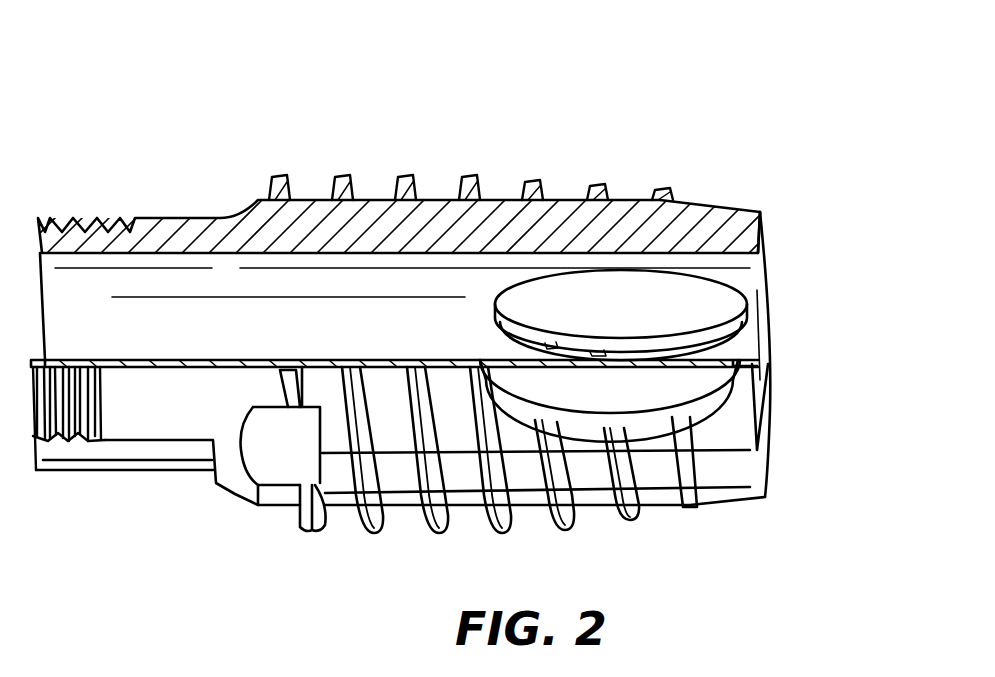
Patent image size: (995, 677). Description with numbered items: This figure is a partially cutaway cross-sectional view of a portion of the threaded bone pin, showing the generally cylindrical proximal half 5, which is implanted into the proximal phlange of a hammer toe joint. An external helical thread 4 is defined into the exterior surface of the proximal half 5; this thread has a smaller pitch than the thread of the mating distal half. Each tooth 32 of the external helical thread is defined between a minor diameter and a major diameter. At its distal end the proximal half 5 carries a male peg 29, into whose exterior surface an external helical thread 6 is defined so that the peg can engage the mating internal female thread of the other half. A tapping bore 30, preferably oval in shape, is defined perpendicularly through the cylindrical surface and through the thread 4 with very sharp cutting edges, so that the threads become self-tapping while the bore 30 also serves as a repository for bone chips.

The proximal half 5 is at (582, 150).
The male peg 29 is at (137, 218).
The external helical thread 4 is at (462, 175).
The tapping bore 30 is at (660, 288).
The tooth 32 is at (757, 287).
The external helical thread 6 is at (63, 410).